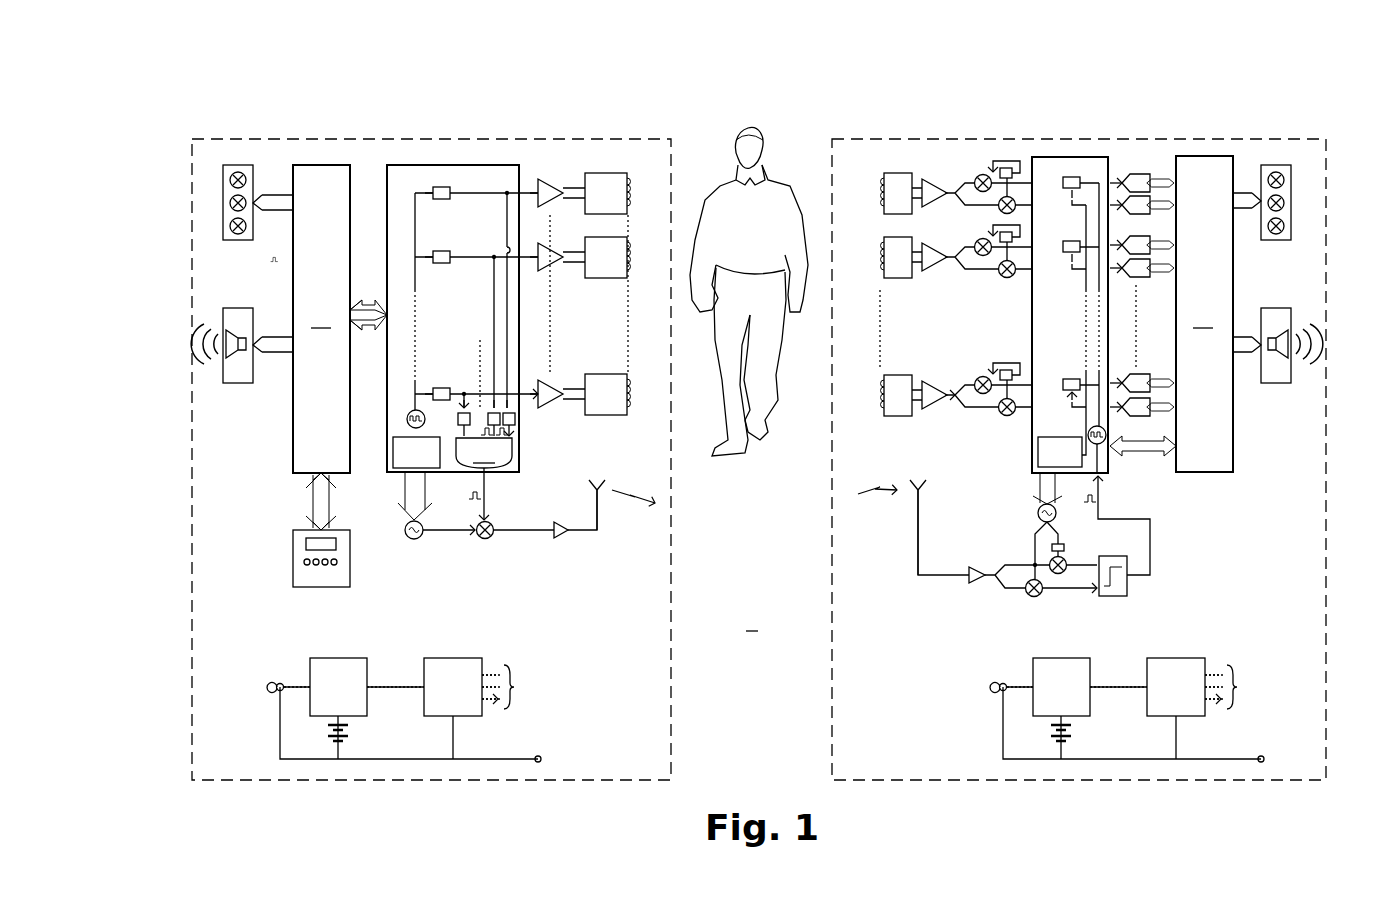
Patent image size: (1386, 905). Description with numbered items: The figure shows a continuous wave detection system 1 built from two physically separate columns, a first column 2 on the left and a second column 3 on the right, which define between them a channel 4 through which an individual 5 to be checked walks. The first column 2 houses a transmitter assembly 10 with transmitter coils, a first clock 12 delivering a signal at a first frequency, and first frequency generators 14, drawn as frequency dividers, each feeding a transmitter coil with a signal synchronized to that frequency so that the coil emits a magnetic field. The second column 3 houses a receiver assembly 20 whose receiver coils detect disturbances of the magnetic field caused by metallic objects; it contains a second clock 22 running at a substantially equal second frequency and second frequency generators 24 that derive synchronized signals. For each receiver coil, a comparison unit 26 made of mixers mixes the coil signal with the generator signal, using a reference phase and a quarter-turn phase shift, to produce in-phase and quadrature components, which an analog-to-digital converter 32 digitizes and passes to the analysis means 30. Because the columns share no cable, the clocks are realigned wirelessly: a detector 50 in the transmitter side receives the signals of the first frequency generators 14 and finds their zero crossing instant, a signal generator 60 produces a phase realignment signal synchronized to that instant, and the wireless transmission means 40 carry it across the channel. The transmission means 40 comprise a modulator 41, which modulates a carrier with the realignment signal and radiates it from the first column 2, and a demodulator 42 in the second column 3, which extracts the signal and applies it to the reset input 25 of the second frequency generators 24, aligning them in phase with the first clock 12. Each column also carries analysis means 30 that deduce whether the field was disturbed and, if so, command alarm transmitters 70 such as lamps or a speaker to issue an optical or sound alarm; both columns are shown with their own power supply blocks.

The detection system 1 is at (1270, 85).
The first column 2 is at (606, 139).
The second column 3 is at (1138, 139).
The channel 4 is at (752, 620).
The individual 5 is at (775, 190).
The transmitter assembly 10 is at (558, 170).
The first clock 12 is at (407, 416).
The first frequency generator 14 is at (448, 187).
The receiver assembly 20 is at (946, 166).
The second clock 22 is at (1102, 448).
The second frequency generator 24 is at (1068, 190).
The reset input 25 is at (1074, 200).
The comparison unit 26 is at (1013, 152).
The analysis means 30 is at (763, 371).
The analog-to-digital converter 32 is at (1138, 190).
The wireless transmission means 40 is at (592, 545).
The modulator 41 is at (597, 500).
The demodulator 42 is at (918, 520).
The detector 50 is at (484, 453).
The signal generator 60 is at (480, 548).
The transmitter 70 is at (223, 213).